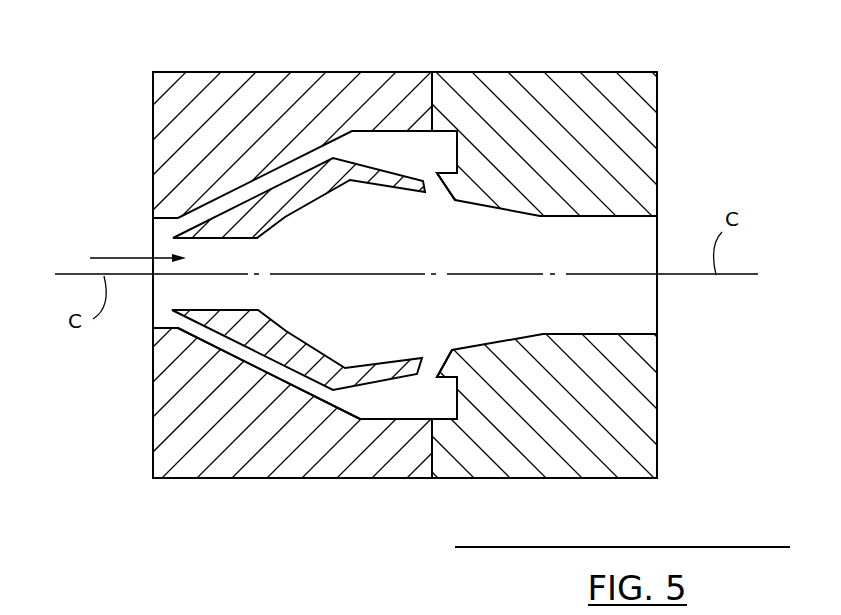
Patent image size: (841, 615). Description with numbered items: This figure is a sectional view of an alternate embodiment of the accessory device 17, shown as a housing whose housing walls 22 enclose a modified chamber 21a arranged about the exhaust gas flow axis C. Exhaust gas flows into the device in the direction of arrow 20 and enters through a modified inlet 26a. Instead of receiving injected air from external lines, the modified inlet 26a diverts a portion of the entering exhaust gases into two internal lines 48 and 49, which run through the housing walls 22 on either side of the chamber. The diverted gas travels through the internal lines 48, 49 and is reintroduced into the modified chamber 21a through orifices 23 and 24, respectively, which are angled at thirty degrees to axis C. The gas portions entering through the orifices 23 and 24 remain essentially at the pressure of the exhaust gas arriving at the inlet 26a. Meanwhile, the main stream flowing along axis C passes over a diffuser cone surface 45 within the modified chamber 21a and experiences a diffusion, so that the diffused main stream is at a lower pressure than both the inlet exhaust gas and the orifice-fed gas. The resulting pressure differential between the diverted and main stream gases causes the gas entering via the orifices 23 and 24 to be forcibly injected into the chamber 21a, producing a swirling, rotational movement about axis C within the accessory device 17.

The accessory device 17 is at (486, 45).
The arrow 20 is at (122, 255).
The modified chamber 21a is at (563, 266).
The housing walls 22 is at (223, 478).
The orifice 23 is at (438, 192).
The orifice 24 is at (436, 360).
The modified inlet 26a is at (172, 310).
The diffuser cone surface 45 is at (318, 206).
The internal line 48 is at (280, 173).
The internal line 49 is at (300, 383).